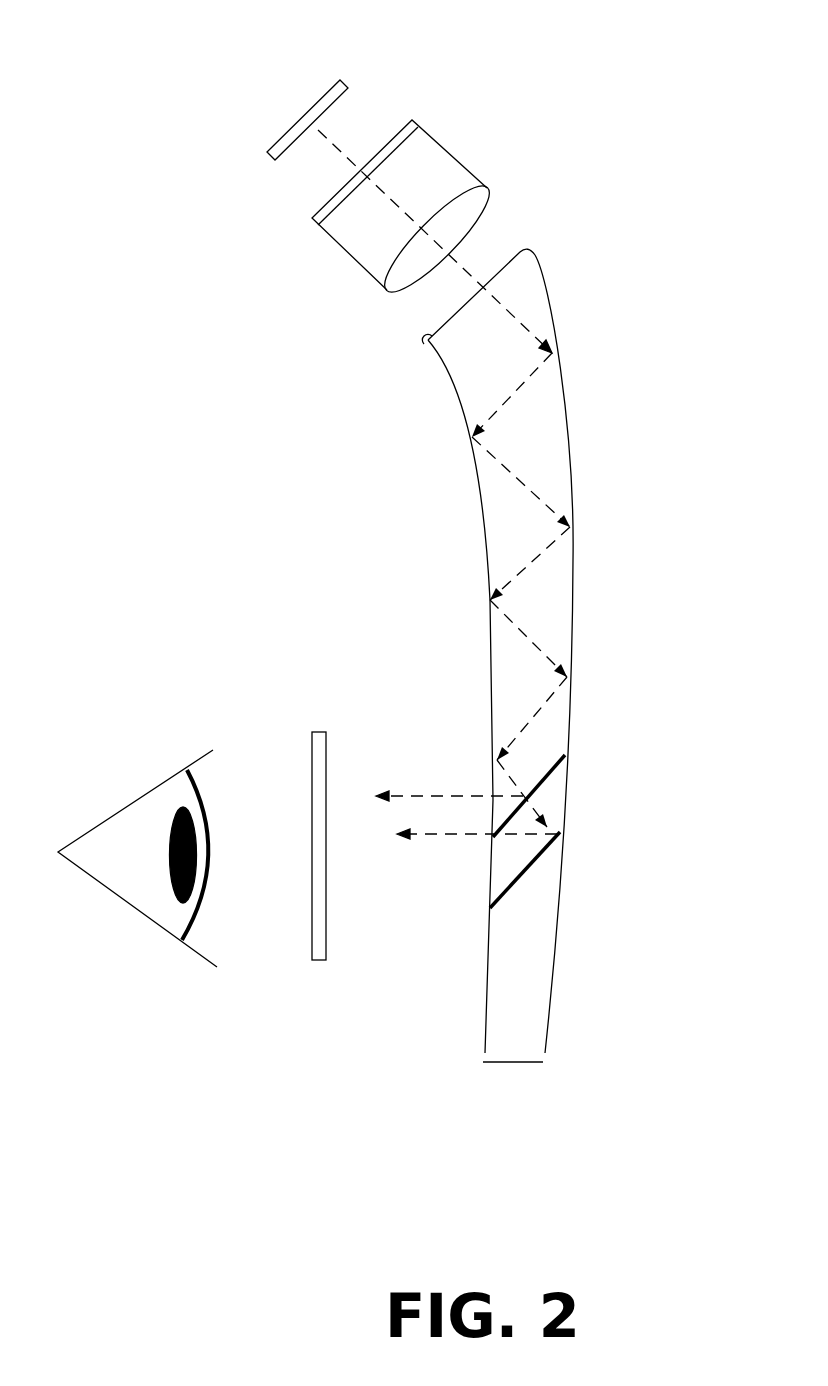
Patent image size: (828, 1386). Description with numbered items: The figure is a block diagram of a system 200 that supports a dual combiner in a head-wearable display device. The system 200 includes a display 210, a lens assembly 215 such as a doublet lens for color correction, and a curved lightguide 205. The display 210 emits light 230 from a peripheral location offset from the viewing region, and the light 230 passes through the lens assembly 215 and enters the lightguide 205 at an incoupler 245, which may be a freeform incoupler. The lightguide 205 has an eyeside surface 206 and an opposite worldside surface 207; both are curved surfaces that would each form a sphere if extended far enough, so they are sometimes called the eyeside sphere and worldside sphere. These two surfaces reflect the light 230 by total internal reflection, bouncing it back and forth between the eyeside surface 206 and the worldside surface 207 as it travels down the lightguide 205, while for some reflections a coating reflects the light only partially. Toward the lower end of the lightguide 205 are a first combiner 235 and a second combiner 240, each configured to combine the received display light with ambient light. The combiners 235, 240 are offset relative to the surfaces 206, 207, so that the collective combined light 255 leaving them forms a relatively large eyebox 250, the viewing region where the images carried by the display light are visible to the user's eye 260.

The system 200 is at (645, 1150).
The lightguide 205 is at (552, 287).
The eyeside surface 206 is at (480, 518).
The worldside surface 207 is at (568, 457).
The display 210 is at (302, 118).
The lens assembly 215 is at (350, 257).
The light 230 is at (320, 132).
The first combiner 235 is at (565, 755).
The second combiner 240 is at (560, 832).
The incoupler 245 is at (428, 340).
The eyebox 250 is at (327, 752).
The combined light 255 is at (390, 829).
The user's eye 260 is at (126, 960).